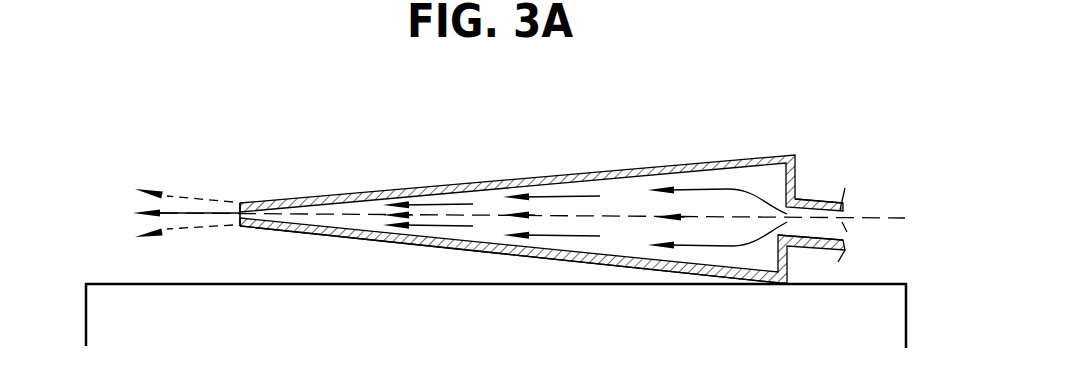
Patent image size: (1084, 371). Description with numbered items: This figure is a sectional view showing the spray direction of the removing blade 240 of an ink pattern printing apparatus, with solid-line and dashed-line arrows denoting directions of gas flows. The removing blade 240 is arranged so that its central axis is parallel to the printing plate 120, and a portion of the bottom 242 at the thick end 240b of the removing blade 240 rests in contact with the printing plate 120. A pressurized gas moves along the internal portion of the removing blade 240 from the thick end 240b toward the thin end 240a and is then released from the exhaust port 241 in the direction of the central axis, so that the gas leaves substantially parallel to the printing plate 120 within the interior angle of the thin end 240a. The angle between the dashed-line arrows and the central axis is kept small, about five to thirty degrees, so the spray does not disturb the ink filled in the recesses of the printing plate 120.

The printing plate 120 is at (106, 300).
The removing blade 240 is at (661, 132).
The thin end 240a is at (241, 210).
The thick end 240b is at (793, 180).
The exhaust port 241 is at (221, 188).
The bottom 242 is at (432, 248).